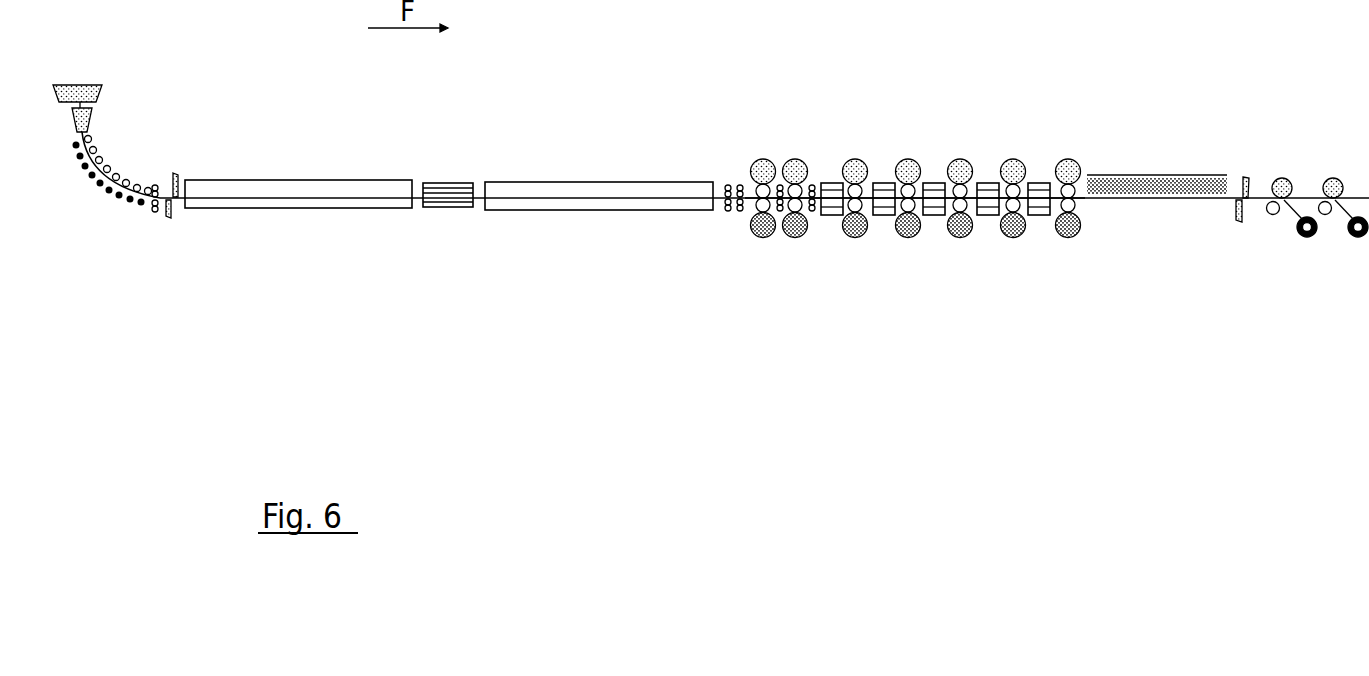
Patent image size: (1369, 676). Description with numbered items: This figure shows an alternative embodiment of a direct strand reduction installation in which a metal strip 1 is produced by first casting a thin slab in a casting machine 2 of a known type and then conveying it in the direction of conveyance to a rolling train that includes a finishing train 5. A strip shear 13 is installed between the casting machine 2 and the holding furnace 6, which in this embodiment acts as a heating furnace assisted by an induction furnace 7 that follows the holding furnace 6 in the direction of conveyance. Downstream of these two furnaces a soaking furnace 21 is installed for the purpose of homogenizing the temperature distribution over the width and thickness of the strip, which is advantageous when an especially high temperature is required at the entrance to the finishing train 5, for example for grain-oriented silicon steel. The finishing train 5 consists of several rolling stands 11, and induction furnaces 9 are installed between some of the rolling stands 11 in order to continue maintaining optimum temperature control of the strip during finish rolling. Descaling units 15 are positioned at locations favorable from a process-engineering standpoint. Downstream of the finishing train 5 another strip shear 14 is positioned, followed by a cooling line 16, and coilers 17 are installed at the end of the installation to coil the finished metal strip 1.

The metal strip 1 is at (1222, 200).
The casting machine 2 is at (140, 152).
The finishing train 5 is at (855, 122).
The holding furnace 6 is at (300, 195).
The induction furnace 7 is at (453, 190).
The induction furnaces 9 is at (830, 172).
The rolling stands 11 is at (797, 242).
The strip shear 13 is at (177, 175).
The strip shear 14 is at (1246, 176).
The descaling units 15 is at (732, 220).
The cooling line 16 is at (1163, 188).
The coilers 17 is at (1285, 178).
The soaking furnace 21 is at (572, 195).